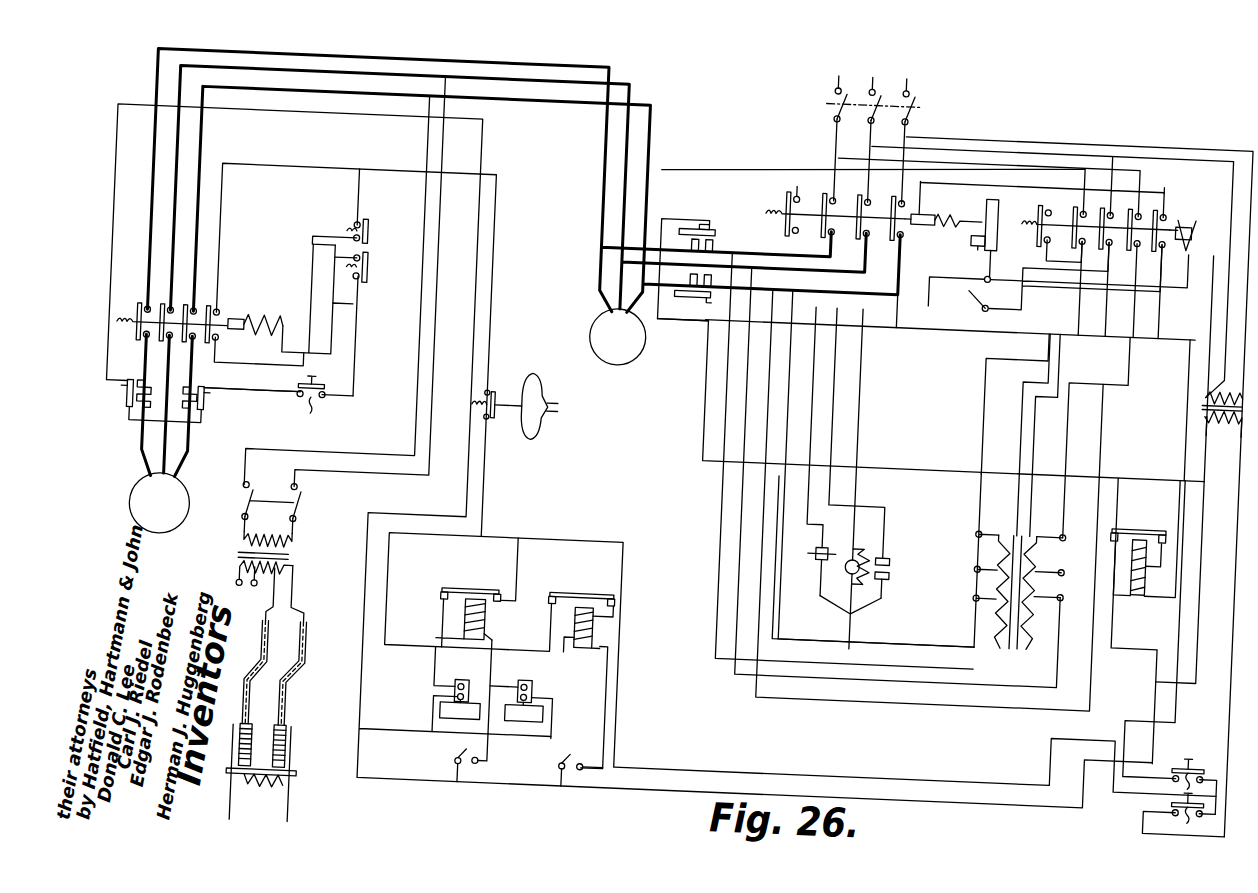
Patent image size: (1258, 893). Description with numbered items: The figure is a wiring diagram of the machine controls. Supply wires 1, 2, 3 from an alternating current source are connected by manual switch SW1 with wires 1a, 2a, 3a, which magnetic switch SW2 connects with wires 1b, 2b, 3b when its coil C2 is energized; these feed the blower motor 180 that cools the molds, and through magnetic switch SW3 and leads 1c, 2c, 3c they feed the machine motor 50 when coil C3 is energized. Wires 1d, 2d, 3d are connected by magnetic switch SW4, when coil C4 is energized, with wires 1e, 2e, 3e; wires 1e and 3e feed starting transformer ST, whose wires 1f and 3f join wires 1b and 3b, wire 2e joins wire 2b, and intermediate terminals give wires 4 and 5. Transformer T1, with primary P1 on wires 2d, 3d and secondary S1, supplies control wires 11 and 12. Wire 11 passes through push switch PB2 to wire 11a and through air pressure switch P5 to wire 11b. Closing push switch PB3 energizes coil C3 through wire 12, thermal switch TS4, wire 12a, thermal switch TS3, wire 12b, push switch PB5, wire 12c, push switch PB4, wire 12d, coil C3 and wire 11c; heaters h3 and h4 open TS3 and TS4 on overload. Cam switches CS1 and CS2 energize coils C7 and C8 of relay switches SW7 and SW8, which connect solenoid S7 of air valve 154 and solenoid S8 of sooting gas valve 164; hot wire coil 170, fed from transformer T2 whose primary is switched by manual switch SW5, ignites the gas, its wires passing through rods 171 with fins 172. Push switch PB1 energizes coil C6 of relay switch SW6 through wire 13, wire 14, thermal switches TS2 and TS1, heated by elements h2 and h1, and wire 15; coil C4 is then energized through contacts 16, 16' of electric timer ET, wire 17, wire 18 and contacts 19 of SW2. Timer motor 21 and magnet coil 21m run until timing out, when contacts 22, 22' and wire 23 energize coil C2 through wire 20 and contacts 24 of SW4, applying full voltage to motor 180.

The wire 1b is at (481, 179).
The wire 2b is at (514, 191).
The wire 3b is at (541, 202).
The motor 180 is at (585, 330).
The motor 50 is at (133, 512).
The wire 1c is at (136, 404).
The wire 2c is at (156, 403).
The wire 3c is at (185, 407).
The heater h4 is at (134, 383).
The heater h3 is at (182, 386).
The thermal switch TS4 is at (118, 398).
The thermal switch TS3 is at (248, 403).
The wire 12a is at (192, 445).
The magnetic switch SW3 is at (196, 313).
The coil C3 is at (291, 298).
The wire 12d is at (303, 304).
The wire 12c is at (351, 355).
The wire 11c is at (322, 244).
The push switch PB3 is at (359, 243).
The push switch PB4 is at (375, 267).
The wire 11b is at (352, 338).
The wire 12b is at (278, 405).
The push switch PB5 is at (327, 400).
The wire 12 is at (476, 156).
The wire 11a is at (485, 514).
The air pressure switch P5 is at (498, 398).
The manual switch SW5 is at (299, 515).
The transformer T2 is at (280, 567).
The supporting rods 171 is at (262, 654).
The heat dissipating fins 172 is at (262, 740).
The hot wire coil 170 is at (261, 773).
The relay switch SW8 is at (475, 635).
The coil C8 is at (492, 626).
The relay switch SW7 is at (554, 609).
The coil C7 is at (598, 628).
The solenoid S8 is at (451, 690).
The sooting gas control valve 164 is at (460, 721).
The solenoid S7 is at (521, 697).
The air control valve 154 is at (525, 724).
The cam controlled switch CS2 is at (455, 757).
The cam controlled switch CS1 is at (571, 765).
The manual switch SW1 is at (897, 111).
The wire 1 is at (831, 79).
The wire 2 is at (865, 81).
The wire 3 is at (899, 82).
The wire 1a is at (823, 159).
The wire 2a is at (857, 160).
The wire 3a is at (891, 162).
The wire 1d is at (975, 148).
The wire 2d is at (1018, 142).
The wire 3d is at (1094, 136).
The magnetic switch SW2 is at (834, 206).
The thermal switch TS1 is at (700, 224).
The thermal switch TS2 is at (685, 305).
The heating element h1 is at (711, 254).
The heating element h2 is at (710, 279).
The wire 23 is at (856, 352).
The coil C2 is at (925, 202).
The normally closed contacts 19 is at (970, 240).
The wire 20 is at (1050, 228).
The magnetic switch SW4 is at (941, 196).
The normally closed contacts 24 is at (1171, 181).
The coil C4 is at (1188, 243).
The wire 14 is at (1182, 414).
The wire 17 is at (1200, 278).
The wire 18 is at (950, 333).
The wire 15 is at (700, 386).
The wire 1f is at (724, 345).
The wire 2e is at (744, 378).
The wire 3f is at (766, 341).
The wire 1e is at (980, 412).
The wire 4 is at (1018, 422).
The wire 5 is at (1035, 422).
The wire 3e is at (1128, 336).
The starting transformer ST is at (1019, 561).
The wire 13 is at (1165, 668).
The electric timer ET is at (873, 576).
The normally closed contacts 16 is at (805, 571).
The normally closed contacts 16' is at (810, 538).
The timer motor 21 is at (850, 538).
The magnet coil 21m is at (871, 546).
The timer contacts 22 is at (895, 586).
The timer contacts 22' is at (880, 437).
The relay switch SW6 is at (1144, 538).
The coil C6 is at (1127, 575).
The wire 11 is at (1205, 526).
The transformer T1 is at (1207, 407).
The primary P1 is at (1224, 388).
The secondary S1 is at (1223, 428).
The push switch PB1 is at (1203, 736).
The push switch PB2 is at (1206, 806).